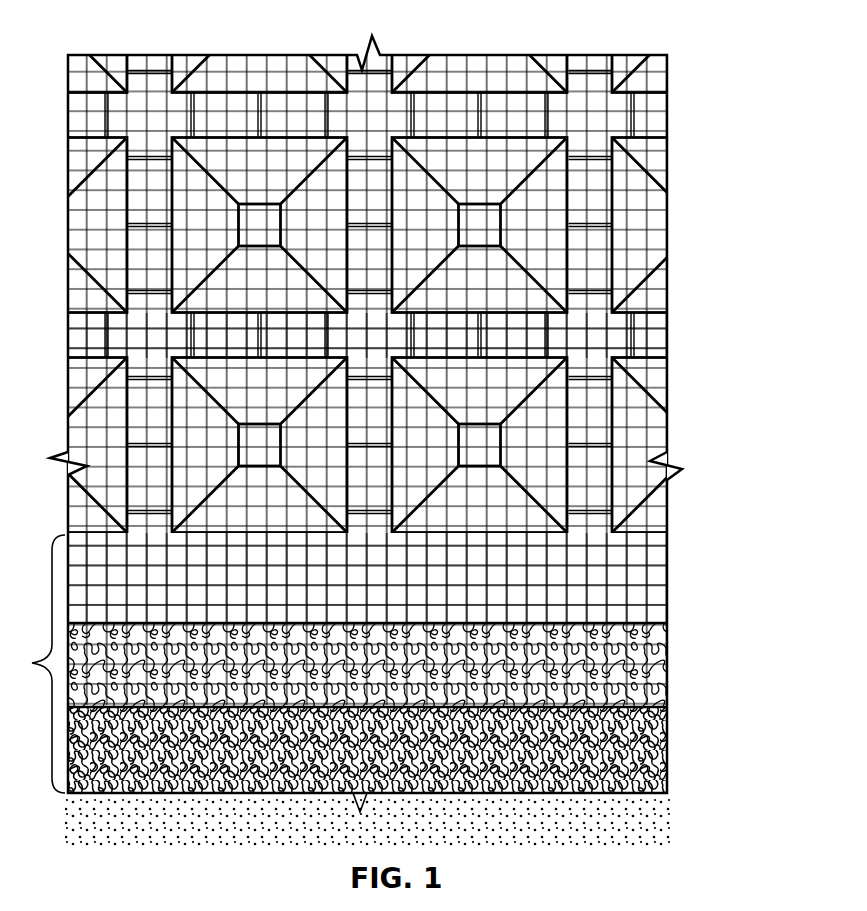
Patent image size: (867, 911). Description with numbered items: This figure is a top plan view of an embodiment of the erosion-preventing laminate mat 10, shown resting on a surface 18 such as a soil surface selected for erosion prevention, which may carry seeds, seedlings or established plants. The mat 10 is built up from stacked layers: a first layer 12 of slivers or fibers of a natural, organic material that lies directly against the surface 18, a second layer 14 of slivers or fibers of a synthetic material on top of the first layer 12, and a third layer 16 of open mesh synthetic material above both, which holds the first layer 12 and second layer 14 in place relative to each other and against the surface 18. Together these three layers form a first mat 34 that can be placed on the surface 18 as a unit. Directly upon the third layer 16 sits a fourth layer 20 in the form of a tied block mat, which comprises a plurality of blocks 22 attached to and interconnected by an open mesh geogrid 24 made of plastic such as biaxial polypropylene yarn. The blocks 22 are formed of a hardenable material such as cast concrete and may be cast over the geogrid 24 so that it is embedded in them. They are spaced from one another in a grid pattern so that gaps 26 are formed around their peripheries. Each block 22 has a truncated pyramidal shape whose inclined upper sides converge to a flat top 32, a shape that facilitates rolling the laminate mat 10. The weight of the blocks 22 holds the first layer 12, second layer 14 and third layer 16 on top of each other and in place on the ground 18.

The erosion-preventing laminate mat 10 is at (697, 197).
The first layer 12 is at (665, 753).
The second layer 14 is at (663, 642).
The third layer 16 is at (650, 584).
The surface 18 is at (635, 823).
The fourth layer 20 is at (668, 242).
The blocks 22 is at (318, 63).
The geogrid 24 is at (610, 443).
The gaps 26 is at (515, 343).
The flat top 32 is at (262, 227).
The first mat 34 is at (36, 664).